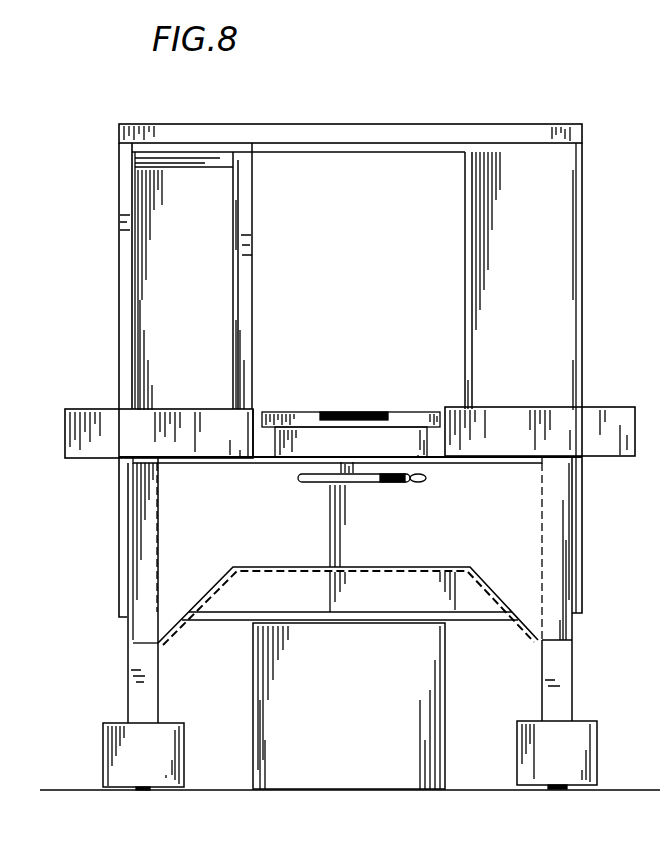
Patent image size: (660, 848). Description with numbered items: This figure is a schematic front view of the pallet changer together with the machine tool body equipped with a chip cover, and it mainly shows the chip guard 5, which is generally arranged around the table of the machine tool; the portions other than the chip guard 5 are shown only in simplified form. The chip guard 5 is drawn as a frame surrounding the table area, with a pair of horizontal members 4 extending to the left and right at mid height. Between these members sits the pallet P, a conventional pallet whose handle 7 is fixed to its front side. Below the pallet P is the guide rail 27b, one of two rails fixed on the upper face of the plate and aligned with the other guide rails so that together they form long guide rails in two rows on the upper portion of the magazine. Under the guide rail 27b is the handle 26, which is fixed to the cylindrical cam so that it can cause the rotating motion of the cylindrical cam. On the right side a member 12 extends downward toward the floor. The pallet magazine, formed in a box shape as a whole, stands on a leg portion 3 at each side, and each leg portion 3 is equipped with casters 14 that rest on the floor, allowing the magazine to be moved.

The chip guard 5 is at (568, 218).
The beam 4 is at (95, 447).
The handle 7 is at (350, 411).
The pallet P is at (412, 411).
The guide rail 27b is at (290, 453).
The handle 26 is at (425, 485).
The leg column 12 is at (598, 561).
The leg portion 3 is at (115, 735).
The casters 14 is at (147, 793).